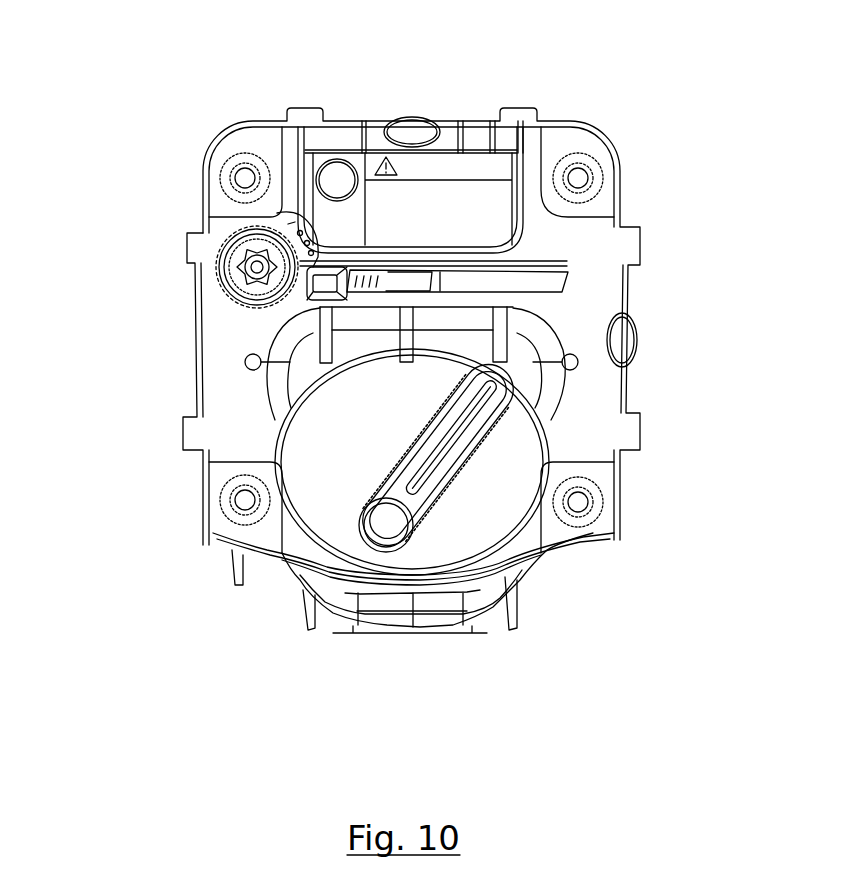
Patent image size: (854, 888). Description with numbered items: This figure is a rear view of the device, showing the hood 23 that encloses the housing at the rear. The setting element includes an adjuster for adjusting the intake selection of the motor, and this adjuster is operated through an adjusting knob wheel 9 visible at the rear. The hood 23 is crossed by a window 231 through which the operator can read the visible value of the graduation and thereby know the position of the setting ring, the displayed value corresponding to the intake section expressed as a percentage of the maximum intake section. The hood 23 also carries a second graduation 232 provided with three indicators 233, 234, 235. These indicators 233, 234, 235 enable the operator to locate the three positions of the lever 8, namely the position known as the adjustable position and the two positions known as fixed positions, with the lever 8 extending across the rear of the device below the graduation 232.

The lever 8 is at (413, 537).
The adjusting knob wheel 9 is at (225, 242).
The hood 23 is at (547, 245).
The window 231 is at (324, 270).
The second graduation 232 is at (586, 301).
The indicator 233 is at (305, 326).
The indicator 234 is at (404, 335).
The indicator 235 is at (507, 336).